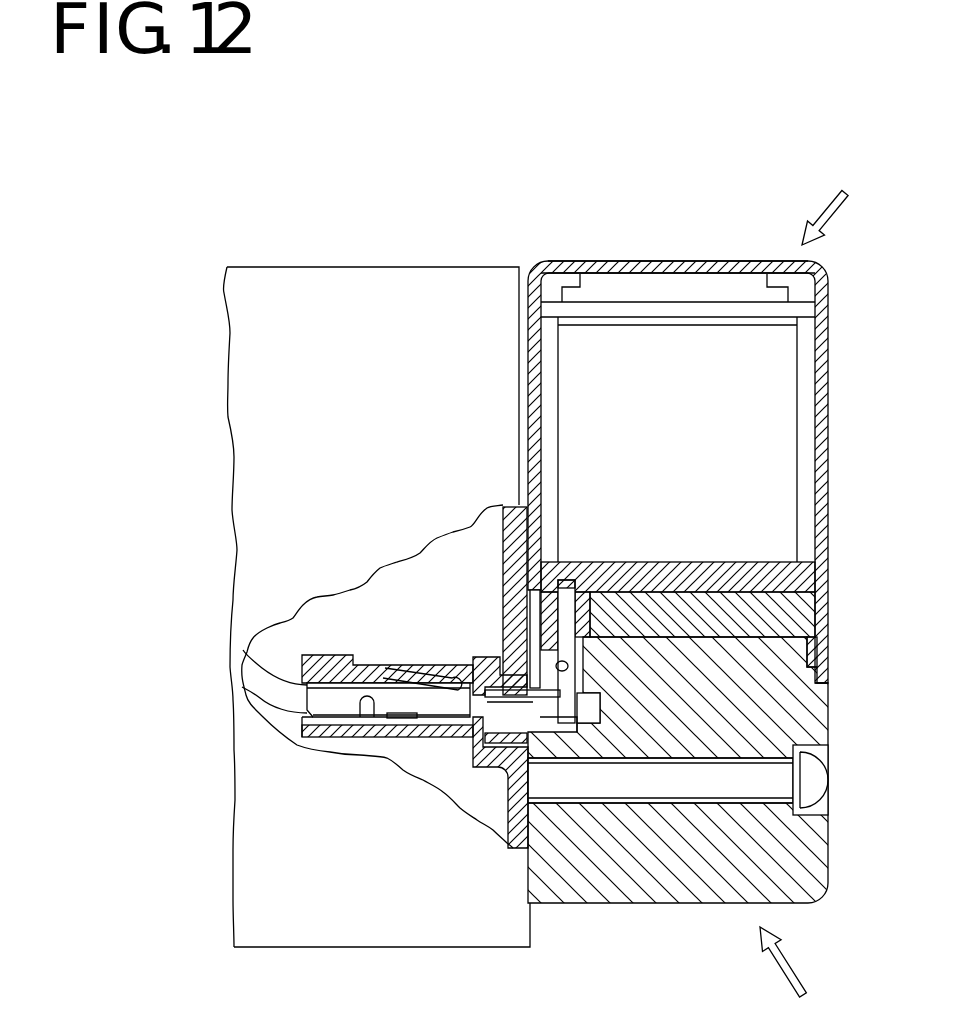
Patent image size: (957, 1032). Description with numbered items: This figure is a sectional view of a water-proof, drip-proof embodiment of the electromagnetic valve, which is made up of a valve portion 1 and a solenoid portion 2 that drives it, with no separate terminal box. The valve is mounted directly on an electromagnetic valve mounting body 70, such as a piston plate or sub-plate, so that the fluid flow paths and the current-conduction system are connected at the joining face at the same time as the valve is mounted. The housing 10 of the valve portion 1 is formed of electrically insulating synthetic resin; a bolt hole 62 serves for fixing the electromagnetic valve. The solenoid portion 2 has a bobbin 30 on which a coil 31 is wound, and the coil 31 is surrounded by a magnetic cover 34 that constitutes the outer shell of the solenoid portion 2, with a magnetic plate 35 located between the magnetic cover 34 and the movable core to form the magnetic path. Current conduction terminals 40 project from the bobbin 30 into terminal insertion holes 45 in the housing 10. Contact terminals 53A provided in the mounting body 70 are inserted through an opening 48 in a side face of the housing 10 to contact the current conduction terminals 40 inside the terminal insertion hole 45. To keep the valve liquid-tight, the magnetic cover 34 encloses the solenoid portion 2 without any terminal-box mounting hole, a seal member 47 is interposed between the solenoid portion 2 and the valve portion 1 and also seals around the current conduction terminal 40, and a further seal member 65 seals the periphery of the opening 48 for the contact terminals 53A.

The valve portion 1 is at (792, 978).
The solenoid portion 2 is at (835, 202).
The housing 10 is at (818, 858).
The bobbin 30 is at (815, 573).
The coil 31 is at (780, 440).
The magnetic cover 34 is at (682, 265).
The magnetic plate 35 is at (797, 613).
The current conduction terminal 40 is at (567, 627).
The terminal insertion hole 45 is at (563, 663).
The seal member 47 is at (820, 652).
The opening 48 is at (470, 738).
The contact terminal 53A is at (543, 717).
The bolt hole 62 is at (690, 793).
The seal member 65 is at (497, 660).
The electromagnetic valve mounting body 70 is at (412, 938).